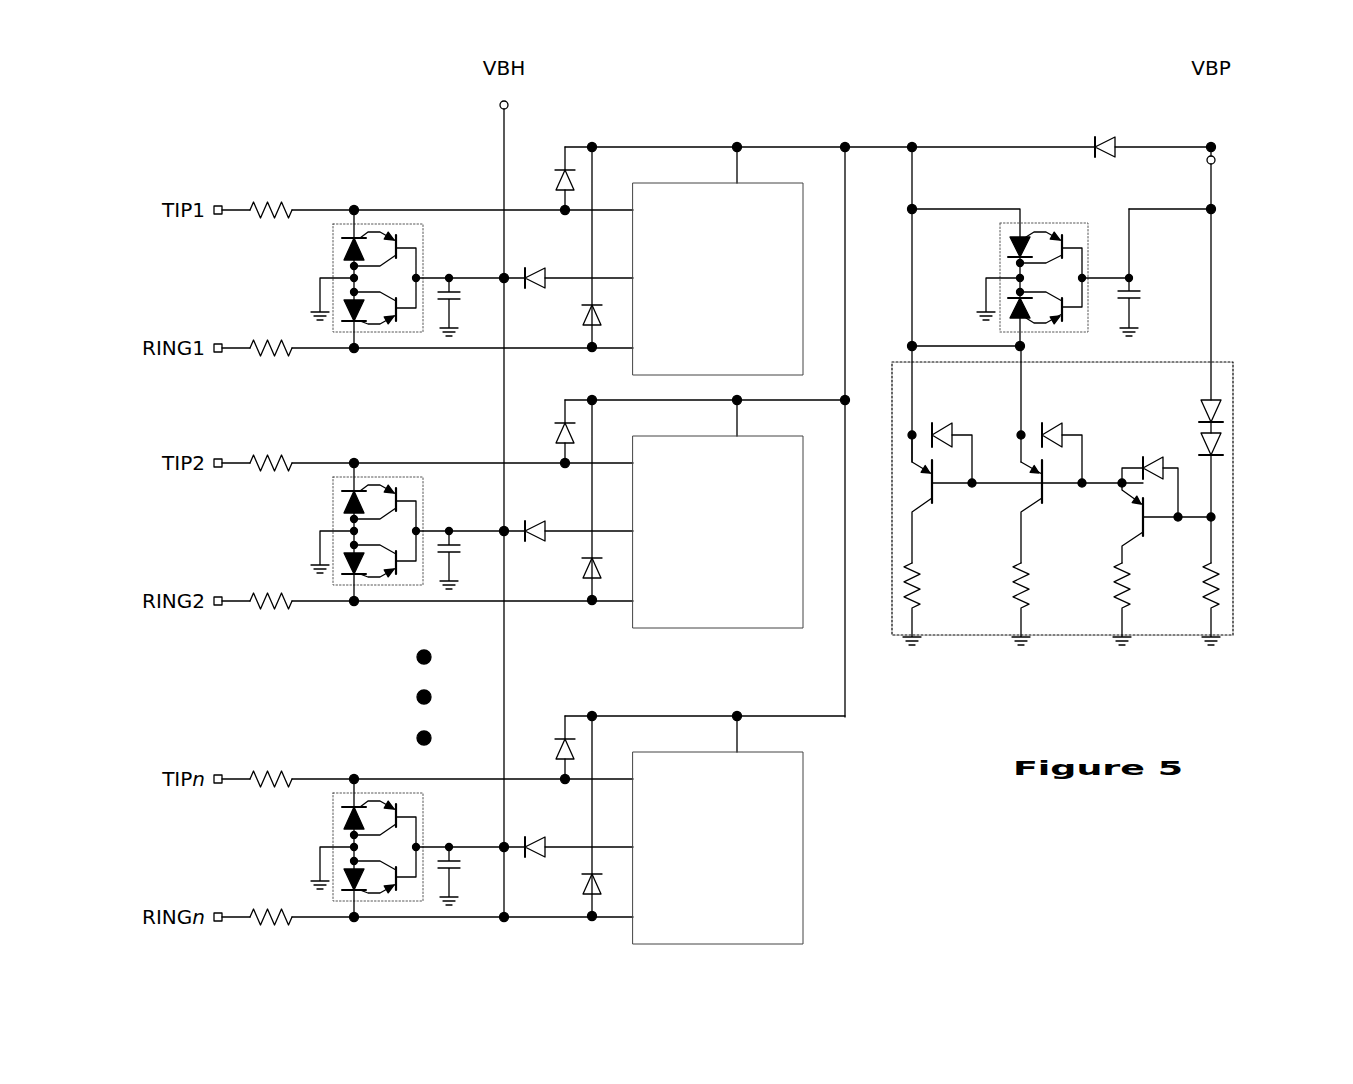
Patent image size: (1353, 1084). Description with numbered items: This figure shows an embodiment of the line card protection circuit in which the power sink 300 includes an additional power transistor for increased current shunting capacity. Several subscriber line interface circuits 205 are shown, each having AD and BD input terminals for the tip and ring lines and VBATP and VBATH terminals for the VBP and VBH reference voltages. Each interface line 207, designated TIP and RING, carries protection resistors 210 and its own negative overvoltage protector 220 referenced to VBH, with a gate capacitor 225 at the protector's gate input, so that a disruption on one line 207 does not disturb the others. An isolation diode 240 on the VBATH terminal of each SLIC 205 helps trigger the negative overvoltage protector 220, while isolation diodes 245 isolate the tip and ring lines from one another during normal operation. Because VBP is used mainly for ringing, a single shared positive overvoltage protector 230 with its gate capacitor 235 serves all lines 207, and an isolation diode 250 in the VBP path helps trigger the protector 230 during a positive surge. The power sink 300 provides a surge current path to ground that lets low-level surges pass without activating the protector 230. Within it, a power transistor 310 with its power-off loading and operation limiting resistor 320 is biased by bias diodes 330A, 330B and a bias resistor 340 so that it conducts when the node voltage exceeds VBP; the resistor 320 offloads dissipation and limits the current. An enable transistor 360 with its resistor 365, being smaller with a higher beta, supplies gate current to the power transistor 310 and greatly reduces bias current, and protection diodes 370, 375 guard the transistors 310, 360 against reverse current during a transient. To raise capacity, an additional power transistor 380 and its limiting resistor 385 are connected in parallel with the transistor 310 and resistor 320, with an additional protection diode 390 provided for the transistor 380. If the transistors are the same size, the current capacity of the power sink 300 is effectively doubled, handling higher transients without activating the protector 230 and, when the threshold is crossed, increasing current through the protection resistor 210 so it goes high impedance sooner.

The subscriber line interface circuit 205 is at (738, 355).
The interface line 207 is at (165, 563).
The protection resistor 210 is at (236, 533).
The negative overvoltage protector 220 is at (418, 563).
The gate capacitor 225 is at (495, 593).
The shared positive overvoltage protector 230 is at (1057, 251).
The gate capacitor 235 is at (1186, 275).
The isolation diode 240 is at (579, 537).
The isolation diode 245 is at (557, 529).
The isolation diode 250 is at (1083, 121).
The power sink 300 is at (1113, 459).
The power transistor 310 is at (1056, 511).
The power-off loading and operation limiting resistor 320 is at (1057, 602).
The bias diode 330A is at (1266, 407).
The bias diode 330B is at (1266, 492).
The bias resistor 340 is at (1261, 598).
The enable transistor 360 is at (1158, 539).
The resistor 365 is at (1102, 604).
The protection diode 370 is at (1051, 414).
The protection diode 375 is at (1146, 465).
The additional power transistor 380 is at (947, 499).
The limiting resistor 385 is at (947, 604).
The additional protection diode 390 is at (946, 429).